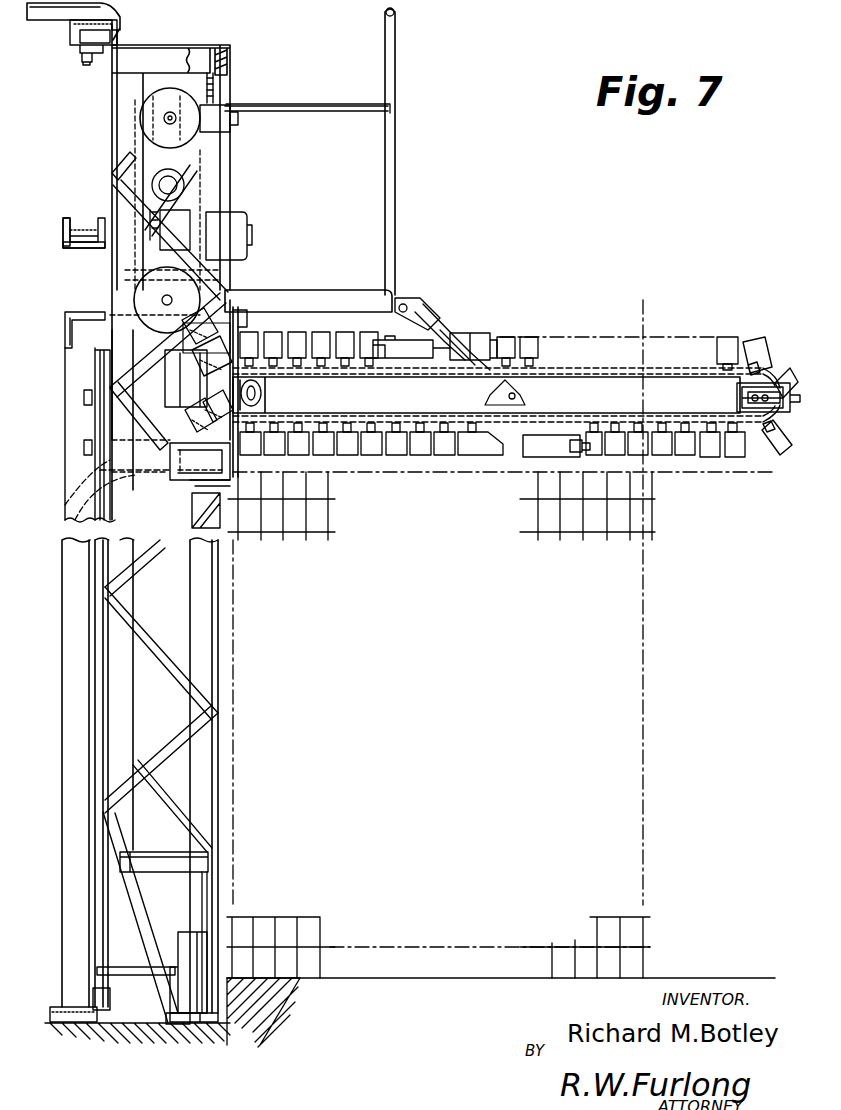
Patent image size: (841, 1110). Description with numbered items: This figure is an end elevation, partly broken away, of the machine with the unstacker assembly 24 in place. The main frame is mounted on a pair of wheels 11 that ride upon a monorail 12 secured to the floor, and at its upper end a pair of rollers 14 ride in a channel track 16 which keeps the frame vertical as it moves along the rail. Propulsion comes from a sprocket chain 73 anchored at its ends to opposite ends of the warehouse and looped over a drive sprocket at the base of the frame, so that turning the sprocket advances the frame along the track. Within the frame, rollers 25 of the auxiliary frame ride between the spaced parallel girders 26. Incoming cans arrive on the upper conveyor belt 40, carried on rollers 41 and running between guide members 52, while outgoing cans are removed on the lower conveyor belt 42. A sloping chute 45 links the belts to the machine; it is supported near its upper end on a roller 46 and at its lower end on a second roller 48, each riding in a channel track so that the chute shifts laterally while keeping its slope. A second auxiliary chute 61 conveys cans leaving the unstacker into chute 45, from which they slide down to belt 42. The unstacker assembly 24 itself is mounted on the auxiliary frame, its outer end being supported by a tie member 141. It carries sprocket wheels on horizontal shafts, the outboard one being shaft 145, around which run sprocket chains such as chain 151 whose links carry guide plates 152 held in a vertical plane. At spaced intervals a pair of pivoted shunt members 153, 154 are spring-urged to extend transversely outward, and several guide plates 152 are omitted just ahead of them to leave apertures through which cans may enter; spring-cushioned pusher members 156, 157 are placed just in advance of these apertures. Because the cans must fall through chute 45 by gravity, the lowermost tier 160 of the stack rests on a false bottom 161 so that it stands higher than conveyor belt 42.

The wheel 11 is at (188, 963).
The monorail 12 is at (208, 1024).
The roller 14 is at (82, 36).
The channel track 16 is at (120, 28).
The unstacker assembly 24 is at (514, 395).
The roller 25 is at (140, 112).
The girder 26 is at (205, 624).
The upper conveyor belt 40 is at (86, 222).
The roller 41 is at (86, 248).
The lower conveyor belt 42 is at (70, 1005).
The sloping chute 45 is at (68, 625).
The roller 46 is at (104, 346).
The second roller 48 is at (108, 1000).
The guide member 52 is at (64, 222).
The second auxiliary chute 61 is at (75, 454).
The sprocket chain 73 is at (172, 1026).
The tie member 141 is at (422, 330).
The horizontal shaft 145 is at (760, 428).
The sprocket chain 151 is at (349, 376).
The guide plate 152 is at (765, 342).
The shunt member 153 is at (396, 340).
The shunt member 154 is at (538, 452).
The pusher member 156 is at (466, 452).
The pusher member 157 is at (482, 340).
The lowermost tier 160 is at (640, 964).
The false bottom 161 is at (252, 1003).